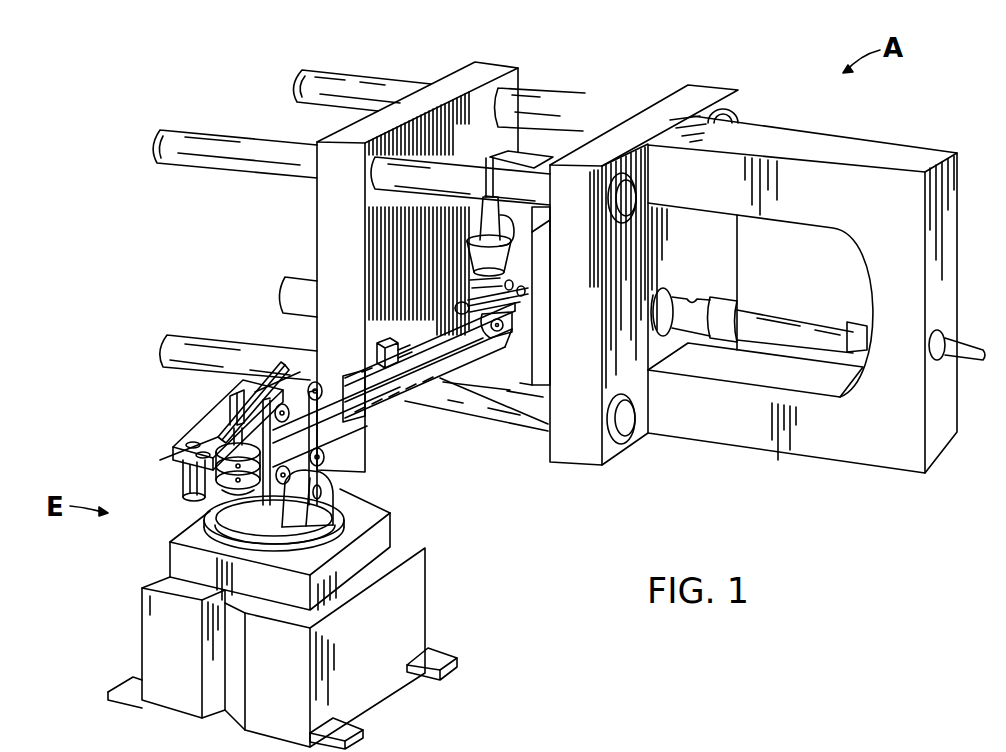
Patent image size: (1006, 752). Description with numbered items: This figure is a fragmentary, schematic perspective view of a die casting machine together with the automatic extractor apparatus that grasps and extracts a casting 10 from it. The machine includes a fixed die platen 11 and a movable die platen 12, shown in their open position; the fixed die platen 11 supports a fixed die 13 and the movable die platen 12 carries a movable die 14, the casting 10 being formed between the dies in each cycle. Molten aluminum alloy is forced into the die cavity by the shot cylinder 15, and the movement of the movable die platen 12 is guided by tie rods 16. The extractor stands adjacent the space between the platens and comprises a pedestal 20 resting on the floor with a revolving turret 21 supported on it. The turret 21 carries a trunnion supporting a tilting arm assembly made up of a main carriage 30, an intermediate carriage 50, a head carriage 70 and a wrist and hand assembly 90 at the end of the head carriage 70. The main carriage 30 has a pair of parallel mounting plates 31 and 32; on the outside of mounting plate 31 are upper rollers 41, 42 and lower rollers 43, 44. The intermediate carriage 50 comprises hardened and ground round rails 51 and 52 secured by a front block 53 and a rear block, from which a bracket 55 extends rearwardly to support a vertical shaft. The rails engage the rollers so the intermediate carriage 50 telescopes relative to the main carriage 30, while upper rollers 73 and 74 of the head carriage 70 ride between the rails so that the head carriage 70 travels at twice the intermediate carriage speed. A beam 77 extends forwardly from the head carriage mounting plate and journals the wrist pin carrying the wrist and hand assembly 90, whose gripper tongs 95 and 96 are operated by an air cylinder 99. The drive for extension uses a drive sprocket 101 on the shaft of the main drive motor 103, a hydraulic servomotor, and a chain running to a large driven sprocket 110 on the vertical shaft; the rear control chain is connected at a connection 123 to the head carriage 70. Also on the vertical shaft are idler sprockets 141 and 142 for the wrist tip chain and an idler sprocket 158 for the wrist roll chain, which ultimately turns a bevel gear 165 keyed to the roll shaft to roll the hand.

The casting 10 is at (486, 158).
The fixed die platen 11 is at (717, 95).
The movable die platen 12 is at (500, 68).
The fixed die 13 is at (543, 355).
The movable die 14 is at (388, 233).
The shot cylinder 15 is at (808, 320).
The tie rods 16 is at (298, 132).
The pedestal 20 is at (140, 630).
The revolving turret 21 is at (333, 510).
The main carriage 30 is at (243, 389).
The mounting plate 31 is at (297, 365).
The mounting plate 32 is at (277, 370).
The upper roller 41 is at (320, 380).
The upper roller 42 is at (255, 380).
The lower roller 43 is at (322, 460).
The lower roller 44 is at (280, 490).
The intermediate carriage 50 is at (338, 442).
The round rail 51 is at (363, 327).
The round rail 52 is at (353, 432).
The front block 53 is at (383, 342).
The bracket 55 is at (235, 428).
The head carriage 70 is at (430, 388).
The upper roller 73 is at (393, 357).
The upper roller 74 is at (348, 378).
The beam 77 is at (472, 353).
The wrist and hand assembly 90 is at (523, 295).
The tong 95 is at (477, 282).
The tong 96 is at (507, 272).
The air cylinder 99 is at (512, 302).
The drive sprocket 101 is at (170, 447).
The main drive motor 103 is at (183, 472).
The driven sprocket 110 is at (188, 493).
The connection 123 is at (312, 512).
The idler sprocket 141 is at (215, 438).
The idler sprocket 142 is at (215, 492).
The idler sprocket 158 is at (183, 459).
The bevel gear 165 is at (460, 306).